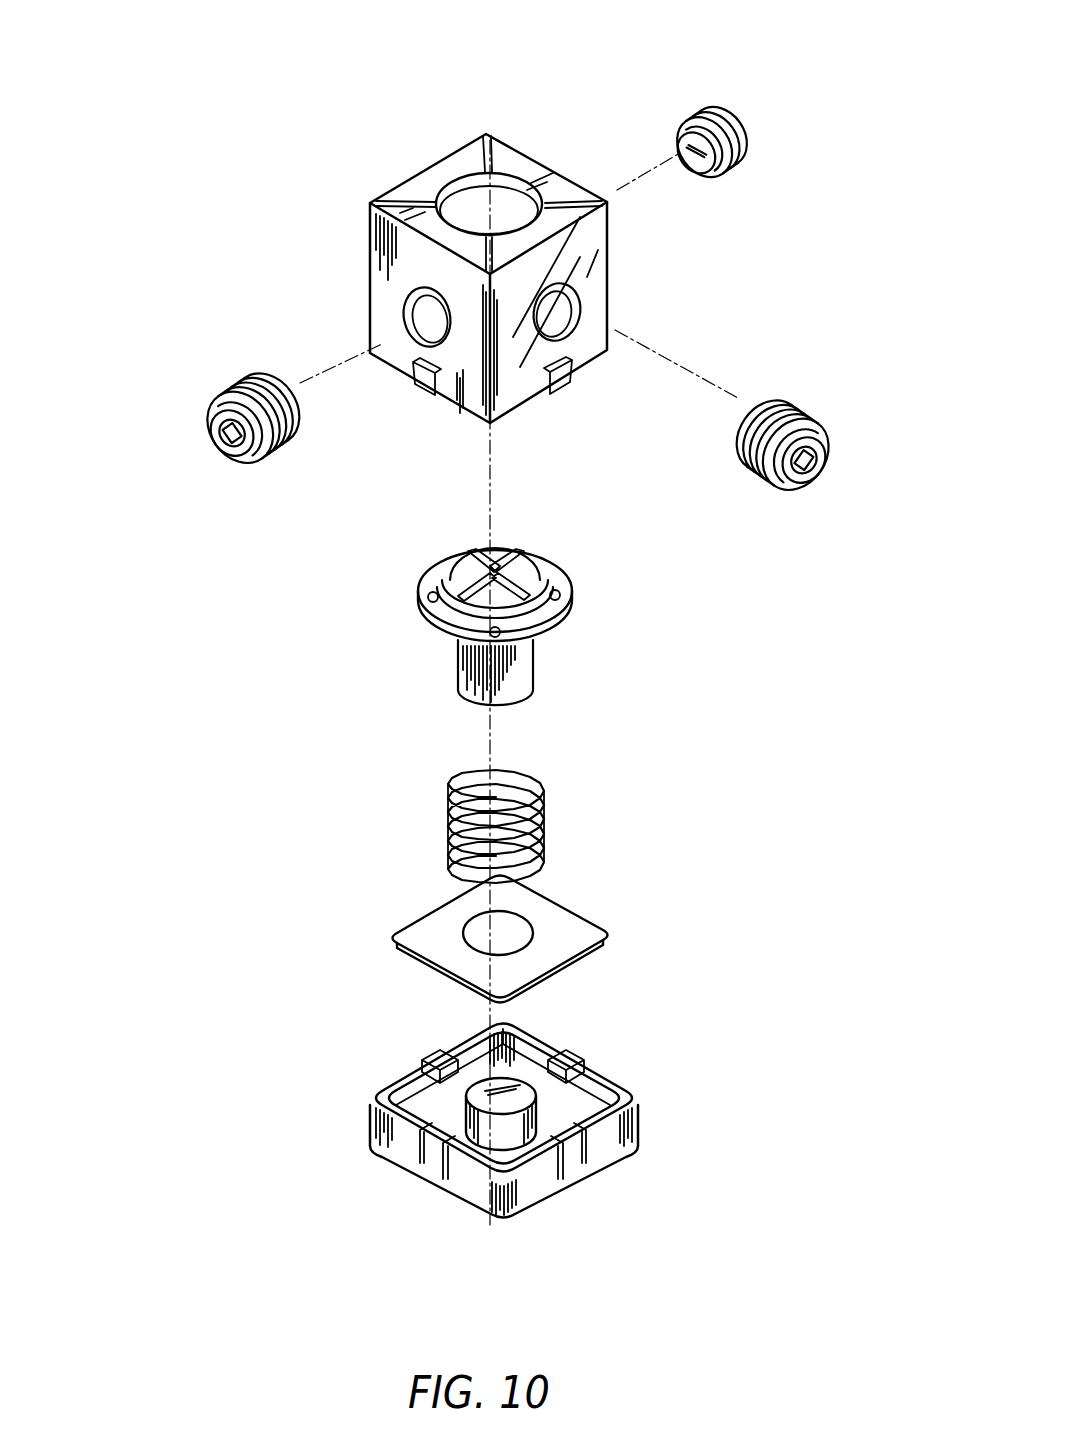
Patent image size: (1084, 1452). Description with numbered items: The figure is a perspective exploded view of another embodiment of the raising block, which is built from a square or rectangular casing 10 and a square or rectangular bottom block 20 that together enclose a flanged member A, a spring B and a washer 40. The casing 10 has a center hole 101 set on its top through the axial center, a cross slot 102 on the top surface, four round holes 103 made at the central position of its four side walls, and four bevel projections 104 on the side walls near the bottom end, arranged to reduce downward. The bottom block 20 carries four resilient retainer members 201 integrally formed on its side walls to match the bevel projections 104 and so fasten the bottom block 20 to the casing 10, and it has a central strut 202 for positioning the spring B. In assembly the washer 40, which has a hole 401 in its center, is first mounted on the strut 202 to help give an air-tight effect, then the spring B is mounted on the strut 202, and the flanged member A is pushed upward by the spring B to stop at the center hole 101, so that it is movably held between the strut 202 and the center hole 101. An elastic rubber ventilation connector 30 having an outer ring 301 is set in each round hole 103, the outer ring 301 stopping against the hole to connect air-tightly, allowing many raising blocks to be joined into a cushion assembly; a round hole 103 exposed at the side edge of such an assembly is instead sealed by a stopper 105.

The casing 10 is at (470, 227).
The center hole 101 is at (512, 195).
The cross slot 102 is at (498, 137).
The round holes 103 is at (415, 305).
The bevel projections 104 is at (422, 378).
The stopper 105 is at (732, 122).
The elastic rubber ventilation connector 30 is at (502, 428).
The outer ring 301 is at (783, 402).
The flanged member A is at (572, 610).
The spring B is at (543, 827).
The washer 40 is at (491, 933).
The hole 401 is at (466, 933).
The bottom block 20 is at (533, 1128).
The resilient retainer members 201 is at (430, 1058).
The central strut 202 is at (500, 1102).